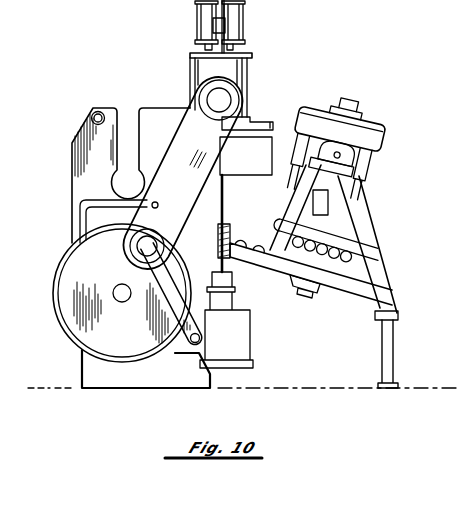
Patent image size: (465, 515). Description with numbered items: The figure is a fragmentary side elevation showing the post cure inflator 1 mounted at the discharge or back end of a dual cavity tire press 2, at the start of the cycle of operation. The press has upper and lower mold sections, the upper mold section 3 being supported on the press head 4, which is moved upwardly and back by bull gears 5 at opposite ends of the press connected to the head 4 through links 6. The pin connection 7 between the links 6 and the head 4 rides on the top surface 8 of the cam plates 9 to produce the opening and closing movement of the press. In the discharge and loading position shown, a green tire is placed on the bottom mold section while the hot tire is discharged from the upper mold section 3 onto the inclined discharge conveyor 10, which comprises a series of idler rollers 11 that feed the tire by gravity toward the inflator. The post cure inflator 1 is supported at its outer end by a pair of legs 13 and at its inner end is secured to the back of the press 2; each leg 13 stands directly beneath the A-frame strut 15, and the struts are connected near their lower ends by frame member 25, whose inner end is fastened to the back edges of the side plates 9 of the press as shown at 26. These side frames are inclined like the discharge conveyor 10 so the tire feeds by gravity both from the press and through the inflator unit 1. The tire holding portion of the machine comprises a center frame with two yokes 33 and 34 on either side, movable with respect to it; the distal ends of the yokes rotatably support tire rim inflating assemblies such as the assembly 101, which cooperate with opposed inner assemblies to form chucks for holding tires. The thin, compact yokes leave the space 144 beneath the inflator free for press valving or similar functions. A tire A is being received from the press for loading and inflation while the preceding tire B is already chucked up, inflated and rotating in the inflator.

The post cure inflator 1 is at (399, 142).
The dual cavity tire press 2 is at (110, 92).
The upper mold section 3 is at (267, 153).
The press head 4 is at (247, 76).
The bull gear 5 is at (80, 267).
The link 6 is at (197, 173).
The pin connection 7 is at (226, 100).
The top surface 8 is at (152, 107).
The cam plate 9 is at (72, 182).
The inclined discharge conveyor 10 is at (242, 222).
The idler roller 11 is at (255, 250).
The leg 13 is at (392, 348).
The A-frame strut 15 is at (358, 215).
The frame member 25 is at (363, 282).
The securing point 26 is at (220, 242).
The yoke 33 is at (348, 95).
The yoke 34 is at (295, 288).
The tire rim inflating assembly 101 is at (314, 300).
The space beneath the post cure inflator 144 is at (311, 363).
The tire A is at (350, 243).
The preceding tire B is at (377, 130).